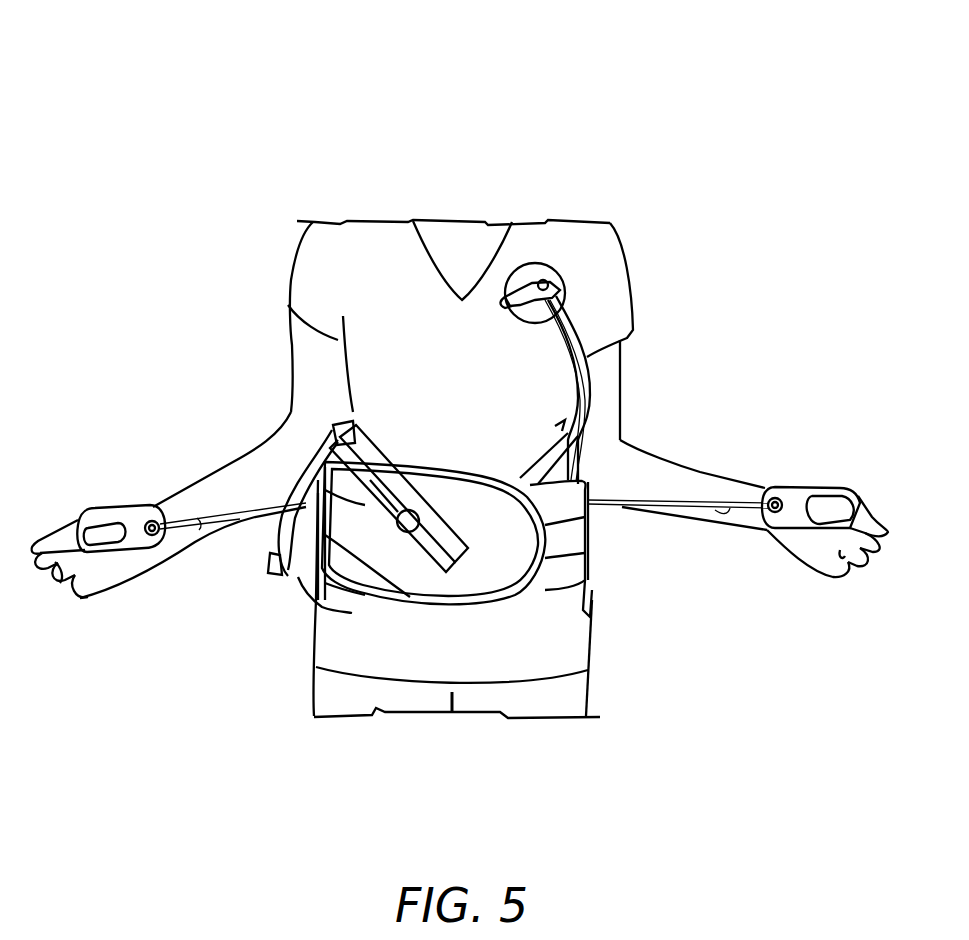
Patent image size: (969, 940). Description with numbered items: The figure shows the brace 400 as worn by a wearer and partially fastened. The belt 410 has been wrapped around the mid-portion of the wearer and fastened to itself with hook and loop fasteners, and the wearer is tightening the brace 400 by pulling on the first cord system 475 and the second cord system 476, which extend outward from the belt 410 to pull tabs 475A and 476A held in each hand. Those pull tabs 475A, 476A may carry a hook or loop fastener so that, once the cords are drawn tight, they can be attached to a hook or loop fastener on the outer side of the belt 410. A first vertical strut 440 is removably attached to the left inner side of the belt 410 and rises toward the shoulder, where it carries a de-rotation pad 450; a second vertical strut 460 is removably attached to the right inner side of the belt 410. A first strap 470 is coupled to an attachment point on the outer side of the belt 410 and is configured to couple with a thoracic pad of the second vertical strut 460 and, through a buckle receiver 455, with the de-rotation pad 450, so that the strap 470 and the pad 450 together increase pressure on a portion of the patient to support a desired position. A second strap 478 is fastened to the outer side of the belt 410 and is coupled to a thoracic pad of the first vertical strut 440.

The brace 400 is at (750, 100).
The belt 410 is at (495, 580).
The first vertical strut 440 is at (590, 397).
The de-rotation pad 450 is at (556, 265).
The buckle receiver 455 is at (503, 297).
The second vertical strut 460 is at (347, 407).
The first strap 470 is at (435, 562).
The first cord system 475 is at (223, 522).
The pull tab 475A is at (130, 504).
The second cord system 476 is at (705, 507).
The pull tab 476A is at (803, 523).
The second strap 478 is at (590, 427).